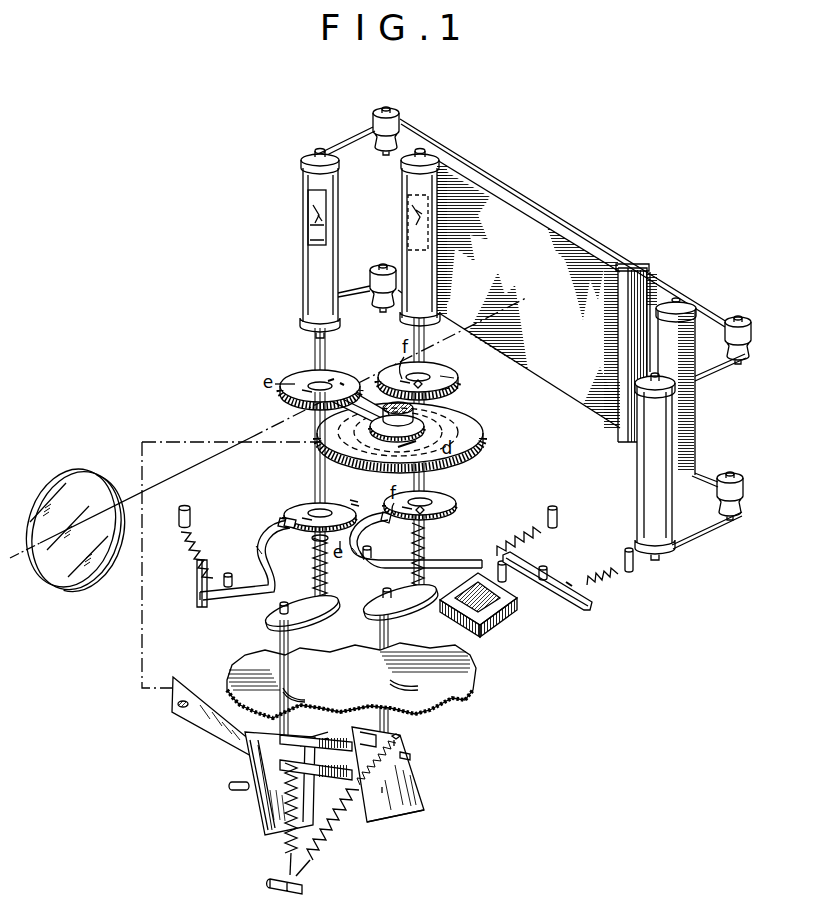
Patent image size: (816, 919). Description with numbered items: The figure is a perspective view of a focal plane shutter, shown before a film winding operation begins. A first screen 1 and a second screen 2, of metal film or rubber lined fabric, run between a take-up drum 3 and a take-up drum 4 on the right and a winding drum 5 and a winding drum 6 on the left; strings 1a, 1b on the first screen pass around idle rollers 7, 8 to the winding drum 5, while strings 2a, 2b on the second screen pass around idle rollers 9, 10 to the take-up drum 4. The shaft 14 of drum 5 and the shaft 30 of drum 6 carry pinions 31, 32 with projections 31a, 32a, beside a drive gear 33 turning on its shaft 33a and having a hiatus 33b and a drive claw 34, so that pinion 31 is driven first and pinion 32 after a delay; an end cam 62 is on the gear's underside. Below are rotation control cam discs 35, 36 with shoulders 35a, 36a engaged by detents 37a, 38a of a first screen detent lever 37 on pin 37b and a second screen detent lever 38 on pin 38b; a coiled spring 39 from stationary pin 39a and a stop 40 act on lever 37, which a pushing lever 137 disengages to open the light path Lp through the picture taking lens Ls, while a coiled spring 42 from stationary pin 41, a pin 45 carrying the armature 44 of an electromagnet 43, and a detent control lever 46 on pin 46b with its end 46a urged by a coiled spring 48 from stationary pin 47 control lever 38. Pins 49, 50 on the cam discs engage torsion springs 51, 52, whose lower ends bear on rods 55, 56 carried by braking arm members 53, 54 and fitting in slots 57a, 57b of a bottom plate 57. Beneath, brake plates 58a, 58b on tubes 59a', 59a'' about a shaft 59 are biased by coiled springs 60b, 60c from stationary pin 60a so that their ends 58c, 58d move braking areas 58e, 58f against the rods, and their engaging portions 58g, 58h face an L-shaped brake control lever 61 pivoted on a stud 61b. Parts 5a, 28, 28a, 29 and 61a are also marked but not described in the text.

The first screen 1 is at (658, 298).
The string 1a is at (508, 196).
The string 1b is at (544, 378).
The second screen 2 is at (550, 226).
The string 2a is at (704, 318).
The string 2b is at (706, 476).
The take-up drum 3 is at (678, 306).
The take-up drum 4 is at (639, 478).
The winding drum 5 is at (304, 281).
The spool window 5a is at (307, 196).
The winding drum 6 is at (402, 162).
The idle roller 7 is at (390, 108).
The idle roller 8 is at (370, 280).
The idle roller 9 is at (742, 320).
The idle roller 10 is at (734, 478).
The shaft 14 is at (316, 346).
The latch member 28 is at (308, 239).
The latch pin 28a is at (324, 218).
The latch lever 29 is at (308, 213).
The shaft 30 is at (430, 348).
The pinion 31 is at (288, 372).
The projection 31a is at (330, 375).
The pinion 32 is at (454, 377).
The projection 32a is at (450, 389).
The drive gear 33 is at (470, 454).
The shaft 33a is at (418, 420).
The hiatus 33b is at (346, 398).
The drive claw 34 is at (355, 406).
The rotation control cam disc 35 is at (308, 501).
The shoulder 35a is at (284, 522).
The rotation control cam disc 36 is at (452, 502).
The shoulder 36a is at (382, 513).
The first screen detent lever 37 is at (266, 595).
The detent 37a is at (280, 517).
The pin 37b is at (254, 548).
The second screen detent lever 38 is at (368, 568).
The detent 38a is at (352, 499).
The pin 38b is at (351, 564).
The coiled spring 39 is at (186, 542).
The stationary pin 39a is at (186, 510).
The stop 40 is at (228, 574).
The stationary pin 41 is at (548, 510).
The coiled spring 42 is at (508, 548).
The electromagnet 43 is at (484, 628).
The armature 44 is at (500, 618).
The pin 45 is at (508, 586).
The detent control lever 46 is at (569, 601).
The end of detent control lever 46a is at (538, 561).
The pin 46b is at (568, 584).
The stationary pin 47 is at (635, 570).
The coiled spring 48 is at (606, 580).
The pin 49 is at (316, 540).
The pin 50 is at (325, 513).
The torsion spring 51 is at (314, 584).
The torsion spring 52 is at (425, 536).
The braking arm member 53 is at (276, 621).
The braking arm member 54 is at (416, 612).
The rod 55 is at (292, 622).
The rod 56 is at (382, 622).
The bottom plate 57 is at (472, 680).
The elongate slot 57a is at (306, 689).
The elongate slot 57b is at (434, 700).
The brake plate 58a is at (276, 842).
The brake plate 58b is at (404, 820).
The end of brake plate 58c is at (268, 764).
The end of brake plate 58d is at (402, 737).
The braking area 58e is at (262, 814).
The braking area 58f is at (414, 788).
The engaging portion 58g is at (286, 696).
The engaging portion 58h is at (348, 700).
The shaft 59 is at (232, 788).
The tube 59a' is at (355, 774).
The tube 59a'' is at (387, 834).
The stationary pin 60a is at (300, 890).
The coiled spring 60b is at (314, 852).
The coiled spring 60c is at (338, 830).
The brake control lever 61 is at (212, 740).
The bracket tab 61a is at (326, 736).
The stud 61b is at (180, 708).
The end cam 62 is at (466, 444).
The pushing lever 137 is at (197, 578).
The picture taking lens Ls is at (87, 482).
The light path Lp is at (266, 420).